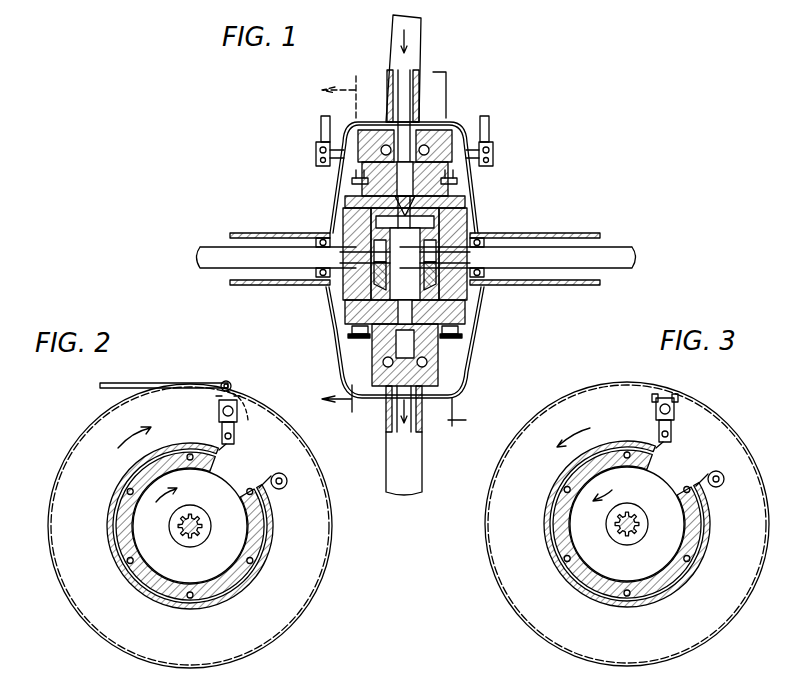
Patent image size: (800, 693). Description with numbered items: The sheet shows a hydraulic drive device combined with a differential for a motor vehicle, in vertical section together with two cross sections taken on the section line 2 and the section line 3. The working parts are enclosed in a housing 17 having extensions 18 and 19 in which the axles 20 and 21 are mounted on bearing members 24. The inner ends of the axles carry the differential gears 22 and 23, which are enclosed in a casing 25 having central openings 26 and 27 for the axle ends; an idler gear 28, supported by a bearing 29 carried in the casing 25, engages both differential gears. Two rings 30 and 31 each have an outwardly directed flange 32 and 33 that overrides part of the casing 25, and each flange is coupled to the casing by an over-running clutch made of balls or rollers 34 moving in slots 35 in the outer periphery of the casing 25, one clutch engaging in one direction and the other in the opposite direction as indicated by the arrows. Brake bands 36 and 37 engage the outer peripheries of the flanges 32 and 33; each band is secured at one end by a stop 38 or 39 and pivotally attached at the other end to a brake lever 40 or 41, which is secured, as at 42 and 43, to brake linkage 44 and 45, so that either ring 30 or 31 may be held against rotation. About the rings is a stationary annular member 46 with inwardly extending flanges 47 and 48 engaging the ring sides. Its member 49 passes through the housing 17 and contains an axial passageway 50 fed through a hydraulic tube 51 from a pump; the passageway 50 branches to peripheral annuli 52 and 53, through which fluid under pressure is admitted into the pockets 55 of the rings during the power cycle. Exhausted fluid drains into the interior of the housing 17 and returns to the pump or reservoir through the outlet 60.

In FIG. 1, the section line 2— 2 is at (327, 244).
In FIG. 1, the section line 3— 3 is at (443, 247).
In FIG. 1, the housing 17 is at (468, 184).
In FIG. 2, the housing 17 is at (52, 460).
In FIG. 3, the housing 17 is at (746, 452).
In FIG. 1, the extension 18 is at (250, 236).
In FIG. 1, the extension 19 is at (598, 234).
In FIG. 1, the axle 20 is at (210, 262).
In FIG. 2, the axle 20 is at (198, 520).
In FIG. 1, the axle 21 is at (616, 250).
In FIG. 3, the axle 21 is at (624, 536).
In FIG. 1, the differential gear 22 is at (376, 288).
In FIG. 1, the differential gear 23 is at (432, 290).
In FIG. 1, the bearing members 24 is at (508, 234).
In FIG. 1, the casing 25 is at (470, 210).
In FIG. 2, the casing 25 is at (214, 602).
In FIG. 3, the casing 25 is at (680, 472).
In FIG. 1, the central opening 26 is at (338, 222).
In FIG. 1, the central opening 27 is at (470, 224).
In FIG. 1, the idler gear 28 is at (372, 214).
In FIG. 1, the bearing 29 is at (372, 204).
In FIG. 1, the ring 30 is at (386, 350).
In FIG. 1, the ring 31 is at (455, 148).
In FIG. 1, the flange 32 is at (356, 196).
In FIG. 2, the flange 32 is at (240, 470).
In FIG. 1, the flange 33 is at (462, 180).
In FIG. 3, the flange 33 is at (572, 466).
In FIG. 2, the balls or rollers 34 is at (126, 493).
In FIG. 3, the balls or rollers 34 is at (630, 452).
In FIG. 2, the slots 35 is at (210, 450).
In FIG. 3, the slots 35 is at (560, 504).
In FIG. 1, the brake band 36 is at (352, 182).
In FIG. 2, the brake band 36 is at (134, 588).
In FIG. 1, the brake band 37 is at (460, 188).
In FIG. 3, the brake band 37 is at (690, 580).
In FIG. 2, the stop 38 is at (288, 480).
In FIG. 3, the stop 39 is at (726, 479).
In FIG. 1, the brake lever 40 is at (338, 150).
In FIG. 2, the brake lever 40 is at (236, 420).
In FIG. 1, the brake lever 41 is at (490, 145).
In FIG. 3, the brake lever 41 is at (672, 418).
In FIG. 2, the securing point 42 is at (222, 408).
In FIG. 3, the securing point 43 is at (674, 402).
In FIG. 1, the brake linkage 44 is at (316, 155).
In FIG. 2, the brake linkage 44 is at (142, 383).
In FIG. 1, the brake linkage 45 is at (484, 158).
In FIG. 1, the stationary annular member 46 is at (440, 128).
In FIG. 1, the inwardly extending flange 47 is at (386, 145).
In FIG. 1, the inwardly extending flange 48 is at (458, 146).
In FIG. 1, the member 49 is at (425, 112).
In FIG. 1, the axial passageway 50 is at (390, 108).
In FIG. 1, the hydraulic tube 51 is at (418, 42).
In FIG. 1, the peripheral annulus 52 is at (384, 144).
In FIG. 1, the peripheral annulus 53 is at (430, 148).
In FIG. 1, the pockets 55 is at (456, 350).
In FIG. 1, the outlet 60 is at (418, 484).